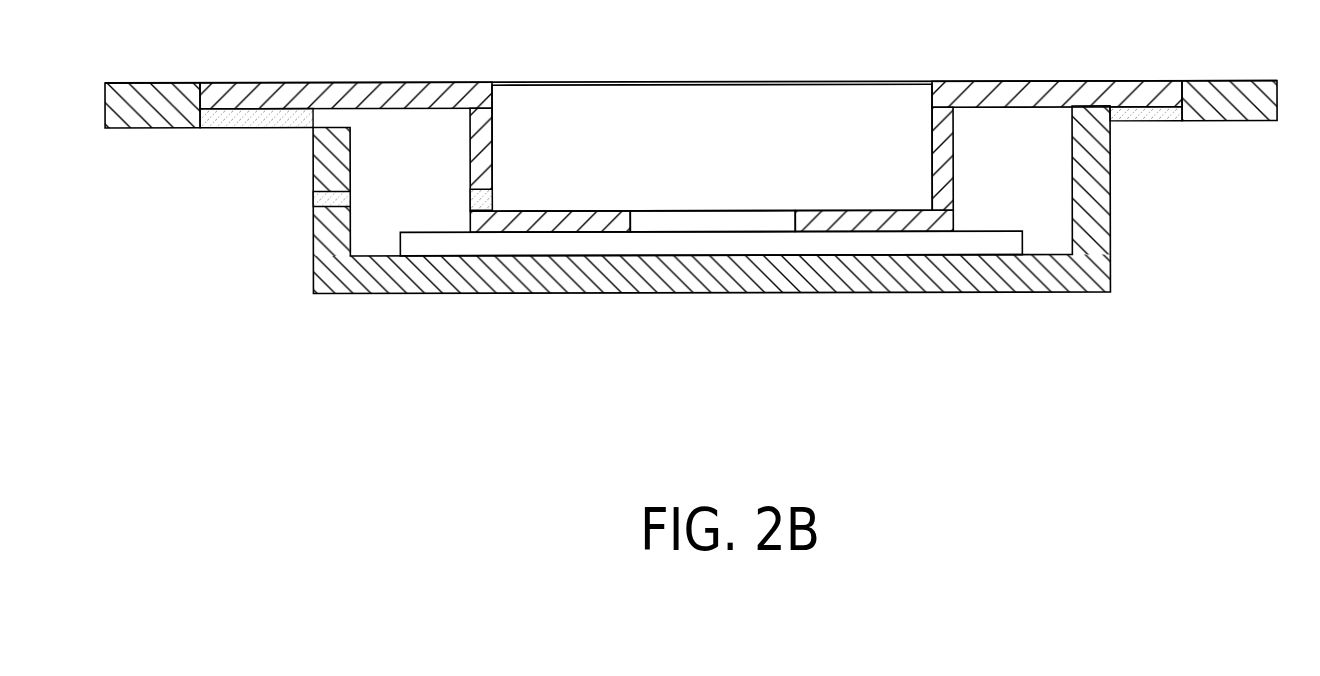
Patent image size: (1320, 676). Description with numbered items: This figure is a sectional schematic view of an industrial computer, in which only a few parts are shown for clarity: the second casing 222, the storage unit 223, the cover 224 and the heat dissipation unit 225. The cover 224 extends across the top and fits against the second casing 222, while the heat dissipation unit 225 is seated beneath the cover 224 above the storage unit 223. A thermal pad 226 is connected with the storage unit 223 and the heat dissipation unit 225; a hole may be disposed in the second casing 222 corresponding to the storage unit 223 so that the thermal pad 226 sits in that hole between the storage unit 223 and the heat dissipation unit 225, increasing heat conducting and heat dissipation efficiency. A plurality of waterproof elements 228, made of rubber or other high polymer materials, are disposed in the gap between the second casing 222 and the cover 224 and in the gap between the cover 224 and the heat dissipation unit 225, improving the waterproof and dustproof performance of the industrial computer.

The second casing 222 is at (1227, 80).
The storage unit 223 is at (1003, 243).
The cover 224 is at (1012, 80).
The heat dissipation unit 225 is at (807, 102).
The thermal pad 226 is at (735, 222).
The waterproof elements 228 is at (247, 118).